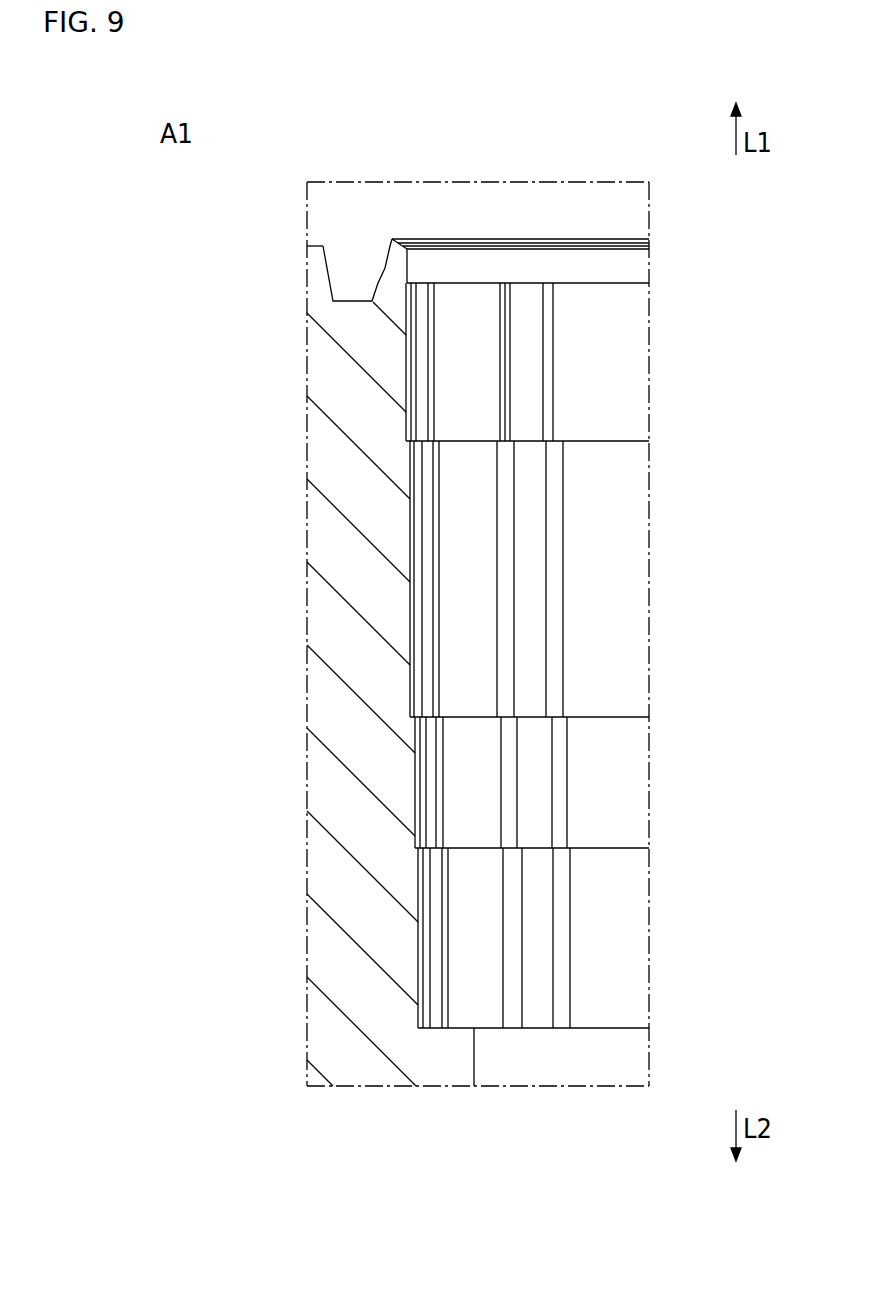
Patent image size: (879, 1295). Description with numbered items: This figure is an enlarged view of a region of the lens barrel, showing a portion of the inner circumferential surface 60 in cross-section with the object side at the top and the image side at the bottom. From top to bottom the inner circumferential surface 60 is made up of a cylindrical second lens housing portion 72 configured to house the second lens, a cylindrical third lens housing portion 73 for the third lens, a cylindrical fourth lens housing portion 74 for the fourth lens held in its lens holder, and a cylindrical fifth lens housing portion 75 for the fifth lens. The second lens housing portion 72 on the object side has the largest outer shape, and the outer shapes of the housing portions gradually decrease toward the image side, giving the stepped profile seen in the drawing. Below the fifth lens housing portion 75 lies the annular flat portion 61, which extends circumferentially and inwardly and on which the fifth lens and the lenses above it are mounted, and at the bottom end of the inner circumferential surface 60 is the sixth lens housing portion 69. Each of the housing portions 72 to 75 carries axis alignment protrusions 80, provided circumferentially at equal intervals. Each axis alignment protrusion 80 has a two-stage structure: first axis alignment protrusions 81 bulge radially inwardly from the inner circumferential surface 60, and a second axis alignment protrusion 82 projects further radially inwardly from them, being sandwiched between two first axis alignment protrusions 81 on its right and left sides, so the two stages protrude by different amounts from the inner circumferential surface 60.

The inner circumferential surface 60 is at (158, 343).
The annular flat portion 61 is at (458, 1028).
The sixth lens housing portion 69 is at (477, 1062).
The second lens housing portion 72 is at (421, 379).
The third lens housing portion 73 is at (421, 638).
The fourth lens housing portion 74 is at (423, 812).
The fifth lens housing portion 75 is at (427, 959).
The axis alignment protrusion 80 is at (436, 313).
The first axis alignment protrusion 81 is at (506, 377).
The second axis alignment protrusion 82 is at (528, 394).